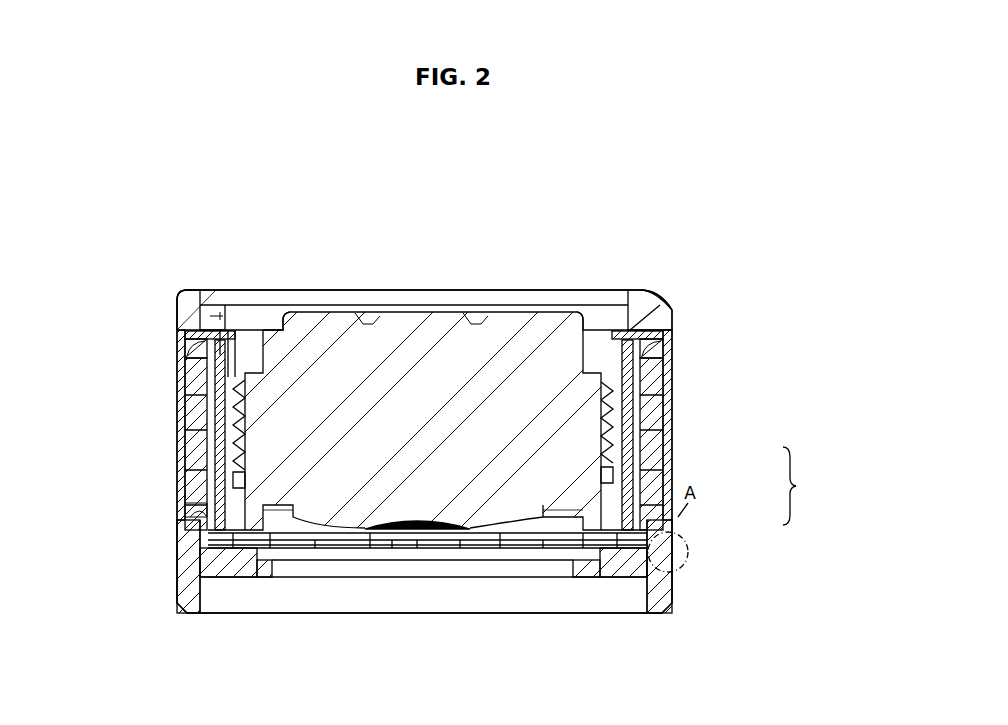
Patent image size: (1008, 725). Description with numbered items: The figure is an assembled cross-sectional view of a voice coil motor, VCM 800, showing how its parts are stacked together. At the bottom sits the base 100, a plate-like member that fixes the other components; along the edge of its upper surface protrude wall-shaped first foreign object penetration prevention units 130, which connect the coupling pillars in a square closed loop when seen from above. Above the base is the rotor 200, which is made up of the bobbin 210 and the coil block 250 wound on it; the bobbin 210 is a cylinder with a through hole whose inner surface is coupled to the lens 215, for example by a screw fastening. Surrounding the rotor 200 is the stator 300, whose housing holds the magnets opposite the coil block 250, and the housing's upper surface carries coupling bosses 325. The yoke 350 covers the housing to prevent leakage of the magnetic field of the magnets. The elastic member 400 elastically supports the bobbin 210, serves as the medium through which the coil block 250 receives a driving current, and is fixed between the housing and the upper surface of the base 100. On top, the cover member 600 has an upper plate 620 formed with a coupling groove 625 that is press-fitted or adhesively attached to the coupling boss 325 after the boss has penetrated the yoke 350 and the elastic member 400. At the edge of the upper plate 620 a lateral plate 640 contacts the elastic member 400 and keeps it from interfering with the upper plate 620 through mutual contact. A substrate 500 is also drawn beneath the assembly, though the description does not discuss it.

The VCM 800 is at (548, 250).
The cover member 600 is at (648, 287).
The upper plate 620 is at (214, 300).
The coupling groove 625 is at (224, 316).
The lateral plate 640 is at (177, 316).
The coupling boss 325 is at (672, 308).
The stator 300 is at (666, 347).
The yoke 350 is at (674, 397).
The elastic member 400 is at (192, 340).
The lens 215 is at (426, 326).
The coil block 250 is at (640, 448).
The bobbin 210 is at (650, 522).
The first foreign object penetration prevention unit 130 is at (688, 546).
The rotor 200 is at (809, 486).
The substrate 500 is at (187, 548).
The base 100 is at (674, 592).